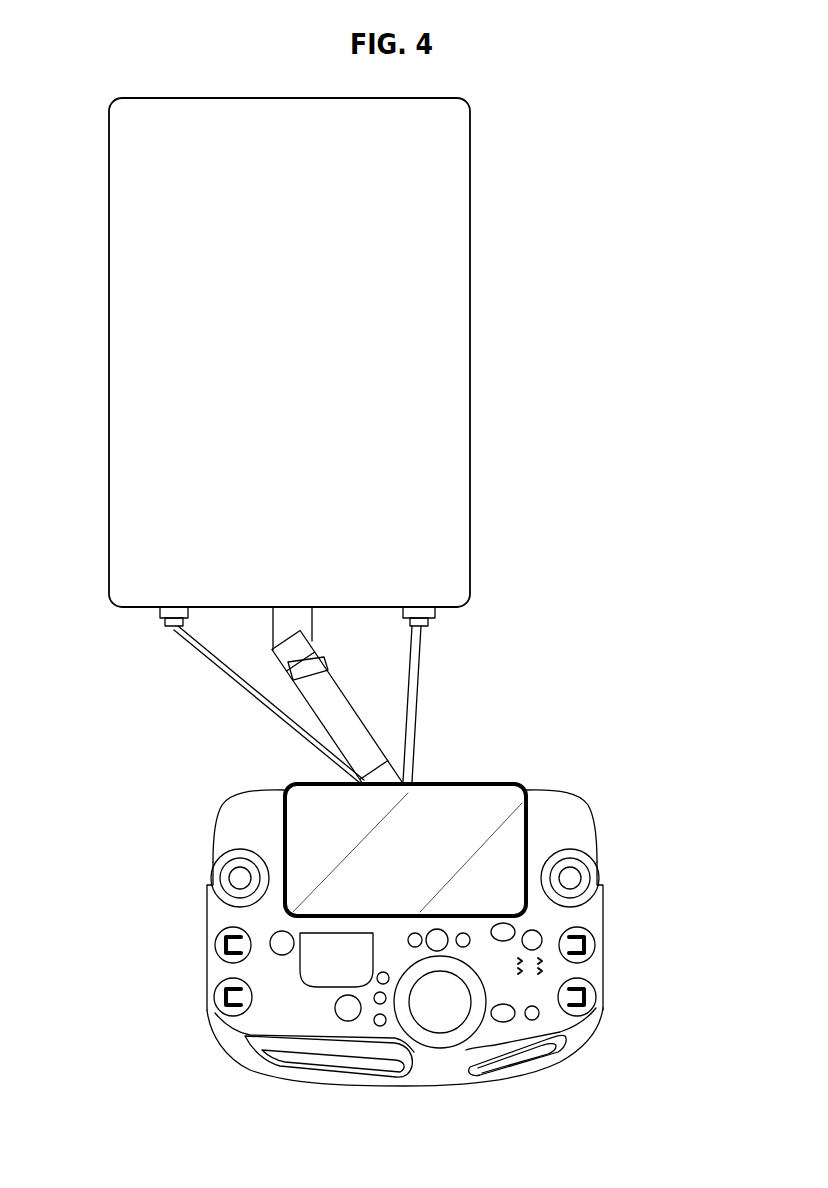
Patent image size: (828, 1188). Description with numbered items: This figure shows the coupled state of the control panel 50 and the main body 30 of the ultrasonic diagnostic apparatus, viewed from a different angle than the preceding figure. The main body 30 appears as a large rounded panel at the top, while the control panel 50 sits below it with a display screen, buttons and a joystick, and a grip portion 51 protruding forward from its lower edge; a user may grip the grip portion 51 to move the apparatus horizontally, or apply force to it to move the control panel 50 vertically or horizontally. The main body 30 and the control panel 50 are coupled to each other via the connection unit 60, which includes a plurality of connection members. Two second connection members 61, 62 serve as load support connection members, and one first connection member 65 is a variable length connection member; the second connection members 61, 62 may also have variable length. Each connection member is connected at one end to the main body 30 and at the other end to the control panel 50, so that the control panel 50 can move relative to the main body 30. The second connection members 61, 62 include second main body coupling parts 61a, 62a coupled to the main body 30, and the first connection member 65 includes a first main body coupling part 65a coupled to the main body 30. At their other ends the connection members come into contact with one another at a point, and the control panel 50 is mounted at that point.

The main body 30 is at (490, 425).
The control panel 50 is at (626, 965).
The grip portion 51 is at (352, 1063).
The connection unit 60 is at (176, 660).
The second connection member 61 is at (404, 717).
The second main body coupling part 61a is at (163, 625).
The second connection member 62 is at (297, 720).
The second main body coupling part 62a is at (435, 612).
The first connection member 65 is at (303, 668).
The first main body coupling part 65a is at (308, 637).